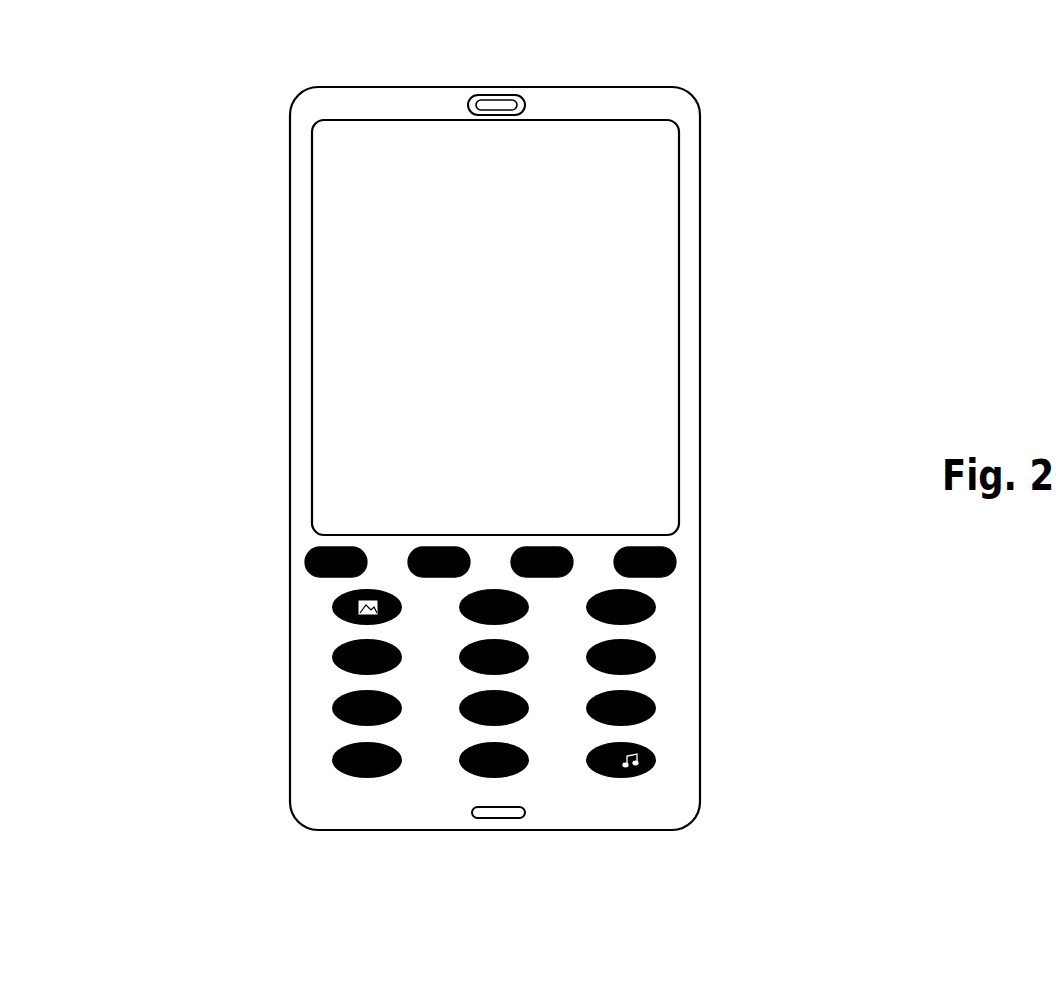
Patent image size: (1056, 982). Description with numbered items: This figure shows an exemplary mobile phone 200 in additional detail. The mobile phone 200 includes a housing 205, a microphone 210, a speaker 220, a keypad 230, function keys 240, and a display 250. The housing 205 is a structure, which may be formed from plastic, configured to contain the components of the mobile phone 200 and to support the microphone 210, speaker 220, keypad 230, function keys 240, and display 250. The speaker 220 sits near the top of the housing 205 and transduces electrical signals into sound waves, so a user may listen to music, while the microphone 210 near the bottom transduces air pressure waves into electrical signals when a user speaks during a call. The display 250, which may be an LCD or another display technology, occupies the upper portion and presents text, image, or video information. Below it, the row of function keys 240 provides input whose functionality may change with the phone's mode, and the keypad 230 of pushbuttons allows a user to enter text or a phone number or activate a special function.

The mobile phone 200 is at (300, 55).
The housing 205 is at (290, 400).
The microphone 210 is at (510, 818).
The speaker 220 is at (507, 95).
The keypad 230 is at (710, 598).
The function keys 240 is at (710, 545).
The display 250 is at (663, 343).